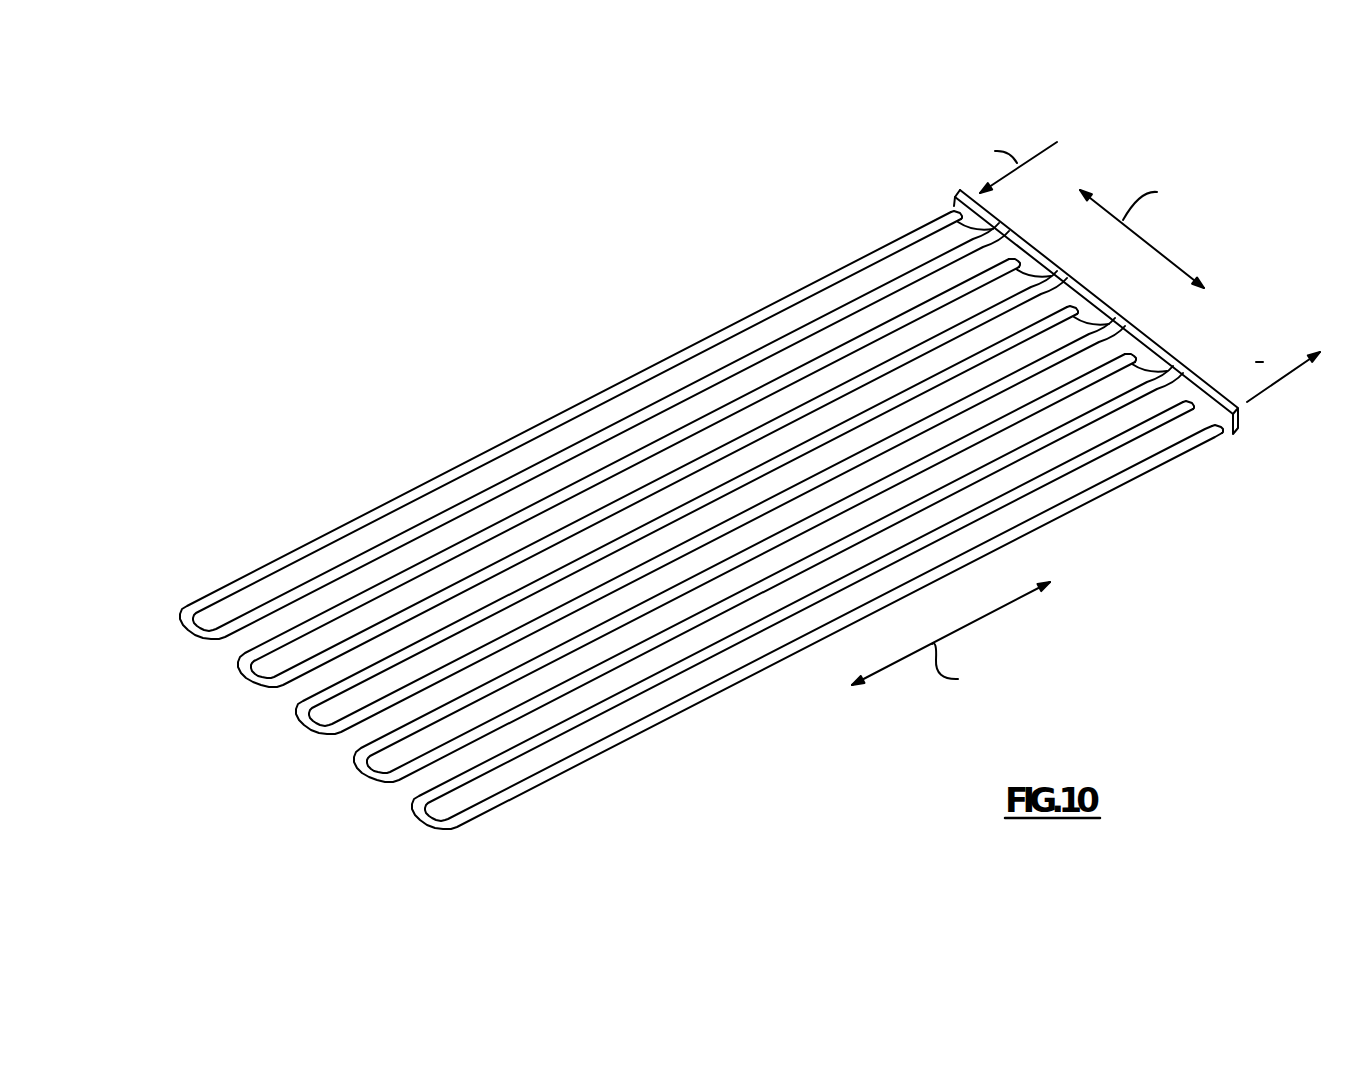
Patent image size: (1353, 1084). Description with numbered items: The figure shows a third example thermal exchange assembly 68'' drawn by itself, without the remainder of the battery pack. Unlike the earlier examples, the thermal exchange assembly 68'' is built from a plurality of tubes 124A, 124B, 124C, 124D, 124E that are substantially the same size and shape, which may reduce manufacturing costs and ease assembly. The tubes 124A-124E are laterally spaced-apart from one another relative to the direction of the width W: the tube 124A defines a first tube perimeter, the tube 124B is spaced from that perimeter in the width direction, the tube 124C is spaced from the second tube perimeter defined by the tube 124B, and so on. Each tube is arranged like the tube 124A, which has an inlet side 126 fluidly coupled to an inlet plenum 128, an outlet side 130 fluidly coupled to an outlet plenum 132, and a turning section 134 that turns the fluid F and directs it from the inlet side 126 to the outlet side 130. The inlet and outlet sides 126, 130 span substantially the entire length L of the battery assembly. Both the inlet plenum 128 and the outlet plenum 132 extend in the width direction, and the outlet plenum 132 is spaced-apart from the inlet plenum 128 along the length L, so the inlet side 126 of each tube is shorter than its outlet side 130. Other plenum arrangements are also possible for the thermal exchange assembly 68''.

The thermal exchange assembly 68'' is at (704, 508).
The tube 124A is at (548, 428).
The tube 124B is at (637, 448).
The tube 124C is at (312, 687).
The tube 124D is at (432, 760).
The tube 124E is at (524, 796).
The inlet side 126 is at (655, 544).
The inlet plenum 128 is at (958, 192).
The outlet side 130 is at (320, 583).
The outlet plenum 132 is at (1055, 298).
The turning section 134 is at (179, 624).